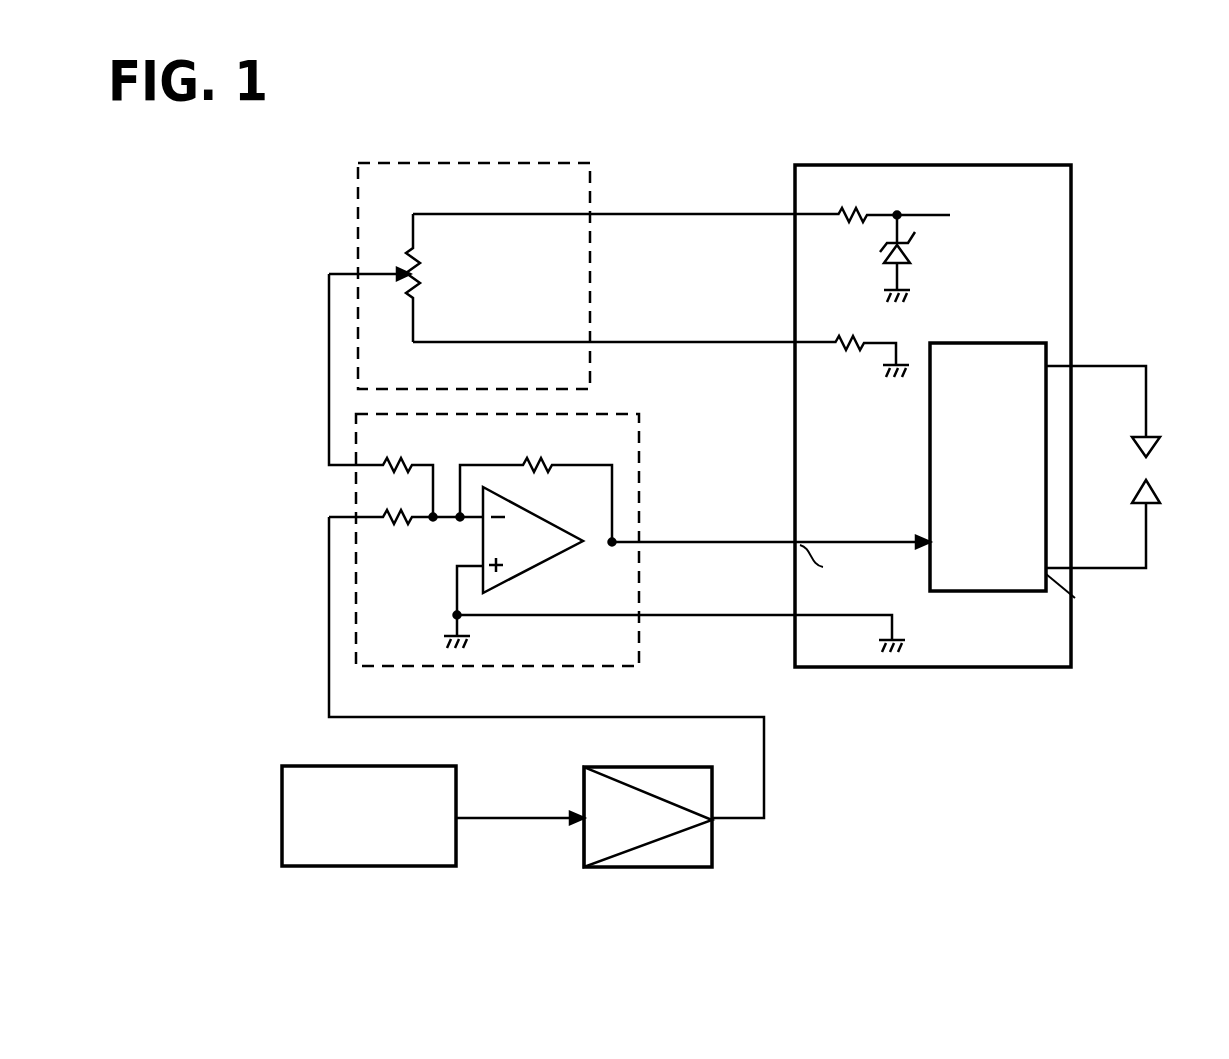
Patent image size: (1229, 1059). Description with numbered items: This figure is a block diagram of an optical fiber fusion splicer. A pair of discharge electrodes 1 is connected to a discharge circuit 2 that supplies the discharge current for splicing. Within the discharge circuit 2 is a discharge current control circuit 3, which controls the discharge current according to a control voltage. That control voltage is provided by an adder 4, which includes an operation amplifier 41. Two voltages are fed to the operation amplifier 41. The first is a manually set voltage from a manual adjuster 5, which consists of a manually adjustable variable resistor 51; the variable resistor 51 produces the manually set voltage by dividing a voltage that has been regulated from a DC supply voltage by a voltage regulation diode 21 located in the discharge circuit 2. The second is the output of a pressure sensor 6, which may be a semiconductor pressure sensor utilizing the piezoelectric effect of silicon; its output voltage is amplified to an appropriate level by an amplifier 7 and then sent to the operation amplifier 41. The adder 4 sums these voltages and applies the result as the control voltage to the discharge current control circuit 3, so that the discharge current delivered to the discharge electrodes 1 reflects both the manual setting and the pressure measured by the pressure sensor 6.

The discharge electrodes 1 is at (1150, 468).
The discharge circuit 2 is at (866, 165).
The voltage regulation diode 21 is at (905, 258).
The discharge current control circuit 3 is at (975, 343).
The adder 4 is at (640, 485).
The operation amplifier 41 is at (530, 569).
The manual adjuster 5 is at (410, 162).
The variable resistor 51 is at (395, 262).
The pressure sensor 6 is at (282, 815).
The amplifier 7 is at (712, 838).